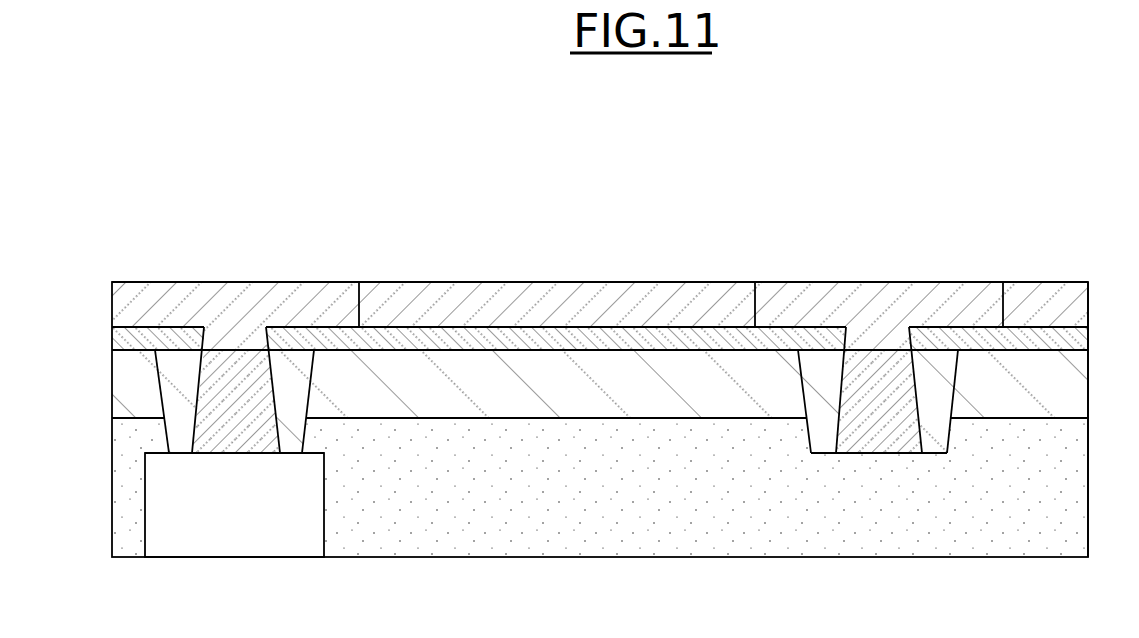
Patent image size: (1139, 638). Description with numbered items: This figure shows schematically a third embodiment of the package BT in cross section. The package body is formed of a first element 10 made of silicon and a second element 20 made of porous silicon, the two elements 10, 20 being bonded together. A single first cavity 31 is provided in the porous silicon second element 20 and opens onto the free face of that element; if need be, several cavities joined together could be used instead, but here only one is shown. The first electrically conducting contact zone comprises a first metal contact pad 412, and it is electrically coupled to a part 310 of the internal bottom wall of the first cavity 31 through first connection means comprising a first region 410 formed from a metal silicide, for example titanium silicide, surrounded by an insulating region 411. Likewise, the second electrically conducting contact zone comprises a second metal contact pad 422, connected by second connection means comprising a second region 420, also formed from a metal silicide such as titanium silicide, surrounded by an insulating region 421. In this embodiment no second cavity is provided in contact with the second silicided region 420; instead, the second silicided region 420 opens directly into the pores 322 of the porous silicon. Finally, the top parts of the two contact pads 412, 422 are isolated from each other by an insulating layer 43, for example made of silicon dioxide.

The first element 10 is at (1083, 378).
The second element 20 is at (1083, 487).
The first cavity 31 is at (250, 517).
The part of the internal bottom wall of the first cavity 310 is at (222, 453).
The pores of the porous silicon 322 is at (895, 453).
The insulating layer 43 is at (673, 310).
The first region 410 is at (227, 388).
The insulating region 411 is at (297, 378).
The first metal contact pad 412 is at (222, 318).
The second region 420 is at (878, 378).
The insulating region 421 is at (820, 378).
The second metal contact pad 422 is at (893, 318).
The package BT is at (1095, 226).